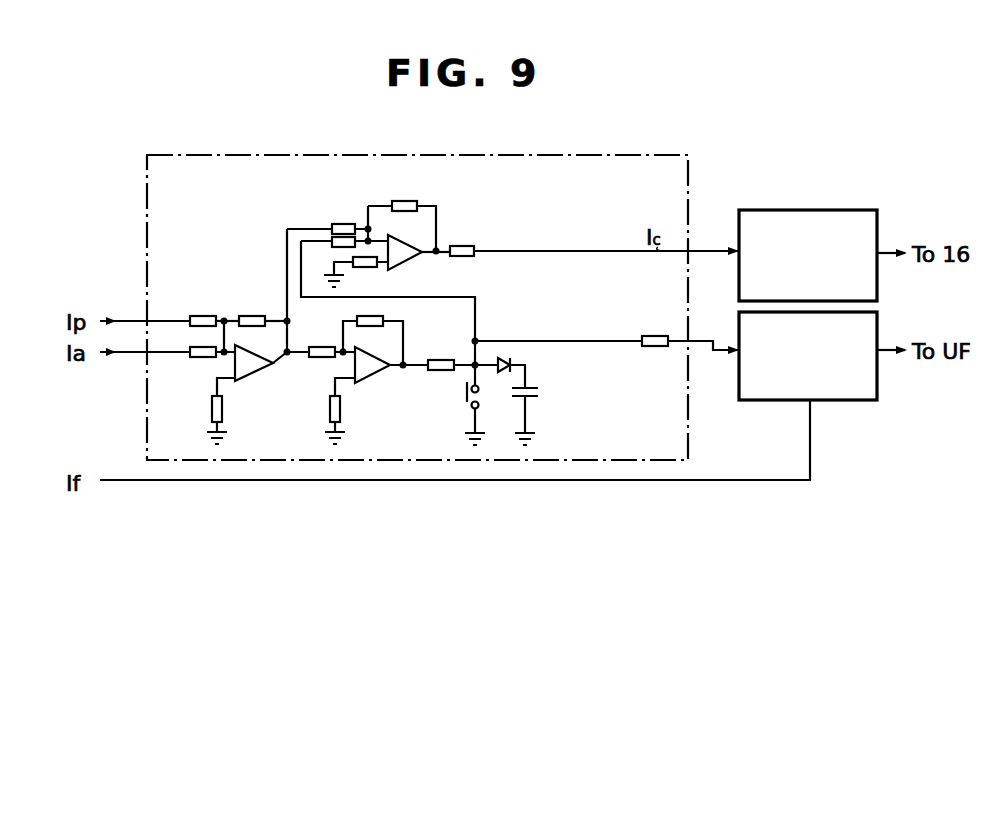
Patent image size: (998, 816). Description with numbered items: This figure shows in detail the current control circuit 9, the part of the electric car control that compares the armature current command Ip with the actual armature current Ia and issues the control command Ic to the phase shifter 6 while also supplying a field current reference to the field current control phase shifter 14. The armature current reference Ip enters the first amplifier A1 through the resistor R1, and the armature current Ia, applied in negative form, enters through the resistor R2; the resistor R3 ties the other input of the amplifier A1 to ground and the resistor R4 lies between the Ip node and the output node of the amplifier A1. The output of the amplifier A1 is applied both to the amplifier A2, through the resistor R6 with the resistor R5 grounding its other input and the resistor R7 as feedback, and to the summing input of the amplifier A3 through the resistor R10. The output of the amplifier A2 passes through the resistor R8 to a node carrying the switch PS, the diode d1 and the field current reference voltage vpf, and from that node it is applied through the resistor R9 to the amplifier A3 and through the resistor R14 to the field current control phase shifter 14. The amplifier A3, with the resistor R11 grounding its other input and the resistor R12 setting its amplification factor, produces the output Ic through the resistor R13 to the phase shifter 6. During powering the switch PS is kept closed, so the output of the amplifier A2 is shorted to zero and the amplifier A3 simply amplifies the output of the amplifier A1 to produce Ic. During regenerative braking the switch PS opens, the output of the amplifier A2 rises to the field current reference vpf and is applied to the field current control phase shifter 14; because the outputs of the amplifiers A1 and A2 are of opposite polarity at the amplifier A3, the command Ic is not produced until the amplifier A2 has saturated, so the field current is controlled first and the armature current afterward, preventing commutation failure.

The current control circuit 9 is at (640, 156).
The phase shifter 6 is at (821, 210).
The field current control phase shifter 14 is at (840, 402).
The resistor R1 is at (201, 316).
The resistor R2 is at (203, 357).
The resistor R3 is at (222, 410).
The resistor R4 is at (253, 316).
The resistor R5 is at (340, 410).
The resistor R6 is at (320, 357).
The resistor R7 is at (390, 332).
The resistor R8 is at (440, 370).
The resistor R9 is at (336, 247).
The resistor R10 is at (344, 224).
The resistor R11 is at (360, 268).
The resistor R12 is at (397, 201).
The resistor R13 is at (462, 257).
The resistor R14 is at (655, 336).
The amplifier A1 is at (255, 373).
The amplifier A2 is at (372, 374).
The amplifier A3 is at (406, 262).
The diode d1 is at (505, 360).
The switch PS is at (467, 392).
The field current reference voltage vpf is at (537, 393).